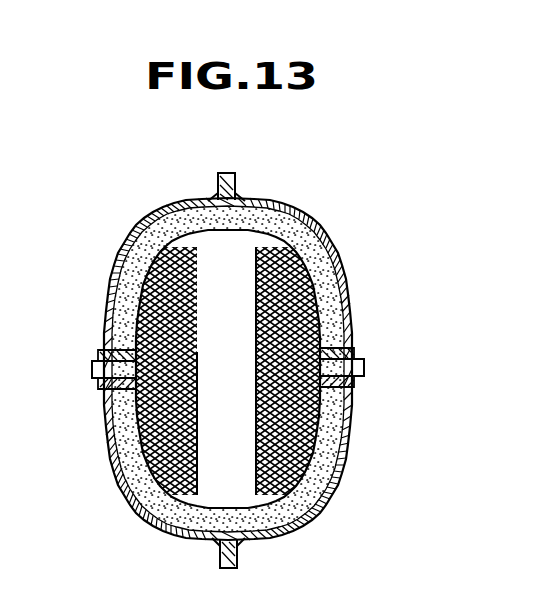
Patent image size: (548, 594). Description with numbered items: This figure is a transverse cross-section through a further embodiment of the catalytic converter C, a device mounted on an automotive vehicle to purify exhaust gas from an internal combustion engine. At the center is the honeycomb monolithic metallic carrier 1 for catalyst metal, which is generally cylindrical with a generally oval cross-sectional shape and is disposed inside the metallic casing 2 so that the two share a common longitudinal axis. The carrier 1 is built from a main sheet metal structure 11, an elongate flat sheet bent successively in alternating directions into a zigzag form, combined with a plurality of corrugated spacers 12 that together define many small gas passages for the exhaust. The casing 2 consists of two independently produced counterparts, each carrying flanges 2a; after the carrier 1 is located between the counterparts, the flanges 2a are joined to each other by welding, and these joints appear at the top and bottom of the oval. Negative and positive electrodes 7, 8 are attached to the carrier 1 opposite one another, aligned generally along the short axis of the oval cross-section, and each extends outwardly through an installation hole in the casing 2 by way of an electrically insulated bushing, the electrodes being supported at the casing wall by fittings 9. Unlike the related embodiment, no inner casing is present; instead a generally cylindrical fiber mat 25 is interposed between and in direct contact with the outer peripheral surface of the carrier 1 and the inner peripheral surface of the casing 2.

The catalytic converter C is at (308, 190).
The honeycomb monolithic metallic carrier 1 is at (308, 269).
The metallic casing 2 is at (344, 486).
The flanges 2a is at (218, 180).
The negative electrode 7 is at (364, 368).
The positive electrode 8 is at (96, 362).
The terminal flanges 9 is at (102, 387).
The main sheet metal structure 11 is at (198, 427).
The corrugated spacers 12 is at (197, 352).
The fiber mat 25 is at (322, 290).